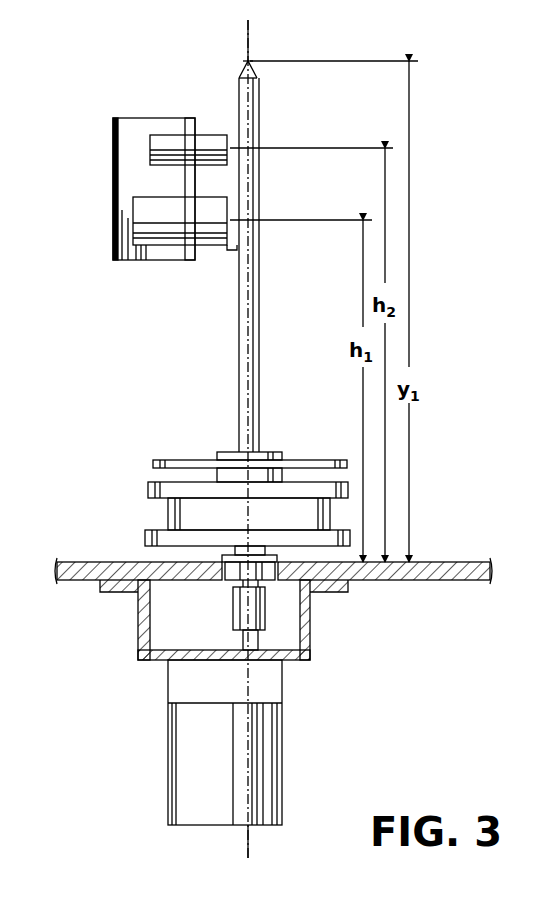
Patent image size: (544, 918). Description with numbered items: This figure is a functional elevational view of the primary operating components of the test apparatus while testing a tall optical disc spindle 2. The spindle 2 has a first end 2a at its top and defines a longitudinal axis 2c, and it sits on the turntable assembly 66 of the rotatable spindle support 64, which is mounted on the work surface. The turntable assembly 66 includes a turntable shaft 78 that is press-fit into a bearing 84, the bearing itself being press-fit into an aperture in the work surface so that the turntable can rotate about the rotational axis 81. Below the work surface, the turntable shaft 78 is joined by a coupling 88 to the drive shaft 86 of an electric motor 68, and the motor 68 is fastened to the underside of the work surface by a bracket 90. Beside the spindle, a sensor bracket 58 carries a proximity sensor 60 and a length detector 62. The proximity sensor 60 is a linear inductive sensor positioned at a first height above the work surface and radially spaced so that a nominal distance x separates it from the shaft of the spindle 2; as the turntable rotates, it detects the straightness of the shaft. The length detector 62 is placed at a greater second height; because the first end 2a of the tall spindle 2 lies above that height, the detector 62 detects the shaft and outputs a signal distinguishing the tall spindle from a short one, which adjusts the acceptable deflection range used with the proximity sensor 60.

The optical disc spindle 2 is at (266, 298).
The first end 2a is at (251, 61).
The longitudinal axis 2c is at (246, 50).
The sensor bracket 58 is at (126, 125).
The proximity sensor 60 is at (155, 222).
The length detector 62 is at (165, 140).
The nominal distance x is at (232, 252).
The rotatable spindle support 64 is at (133, 418).
The turntable assembly 66 is at (150, 534).
The turntable shaft 78 is at (236, 547).
The bearing 84 is at (228, 586).
The coupling 88 is at (234, 620).
The drive shaft 86 is at (243, 640).
The bracket 90 is at (139, 663).
The electric motor 68 is at (170, 765).
The rotational axis 81 is at (247, 850).